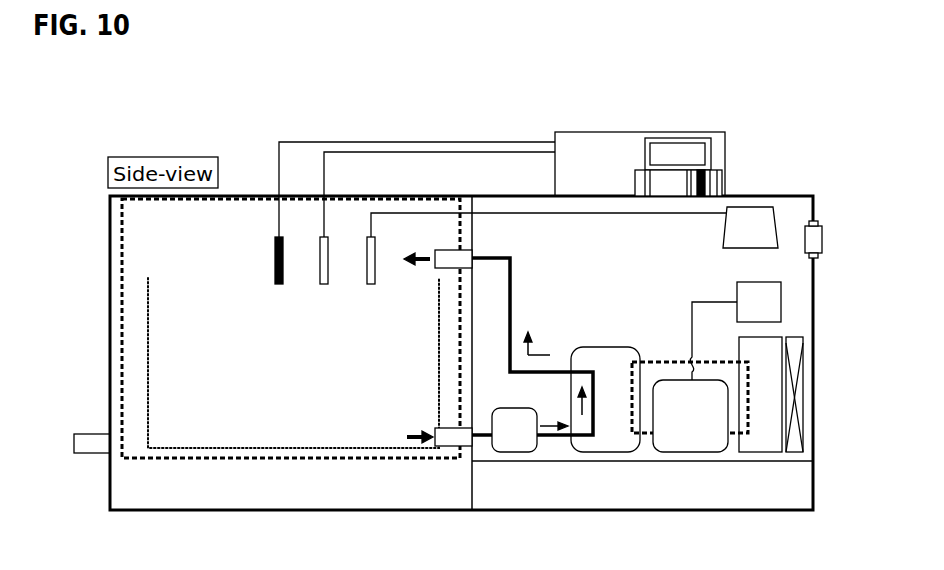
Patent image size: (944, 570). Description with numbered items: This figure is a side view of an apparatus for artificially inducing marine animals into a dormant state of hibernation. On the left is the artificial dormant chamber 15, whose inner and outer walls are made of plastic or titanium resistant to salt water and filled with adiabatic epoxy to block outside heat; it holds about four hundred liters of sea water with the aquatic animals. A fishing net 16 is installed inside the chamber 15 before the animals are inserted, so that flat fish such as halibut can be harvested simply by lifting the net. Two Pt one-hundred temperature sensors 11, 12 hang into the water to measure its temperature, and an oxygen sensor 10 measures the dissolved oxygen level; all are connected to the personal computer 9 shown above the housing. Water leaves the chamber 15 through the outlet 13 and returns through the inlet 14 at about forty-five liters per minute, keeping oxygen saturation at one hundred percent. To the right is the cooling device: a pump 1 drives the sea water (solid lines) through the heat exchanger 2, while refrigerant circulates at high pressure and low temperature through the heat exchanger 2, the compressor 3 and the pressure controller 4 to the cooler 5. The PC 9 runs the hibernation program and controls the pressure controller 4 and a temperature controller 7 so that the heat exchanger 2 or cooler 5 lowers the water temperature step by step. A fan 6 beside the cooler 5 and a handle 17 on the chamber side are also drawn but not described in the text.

The pump 1 is at (513, 453).
The heat exchanger 2 is at (605, 453).
The compressor 3 is at (700, 453).
The pressure controller 4 is at (737, 284).
The cooler 5 is at (760, 453).
The fan 6 is at (803, 373).
The temperature controller 7 is at (725, 235).
The personal computer 9 is at (602, 173).
The oxygen sensor 10 is at (279, 284).
The temperature sensor 11 is at (324, 284).
The temperature sensor 12 is at (371, 284).
The outlet 13 is at (440, 428).
The inlet 14 is at (437, 268).
The artificial dormant chamber 15 is at (302, 401).
The fishing net 16 is at (148, 408).
The handle 17 is at (90, 434).